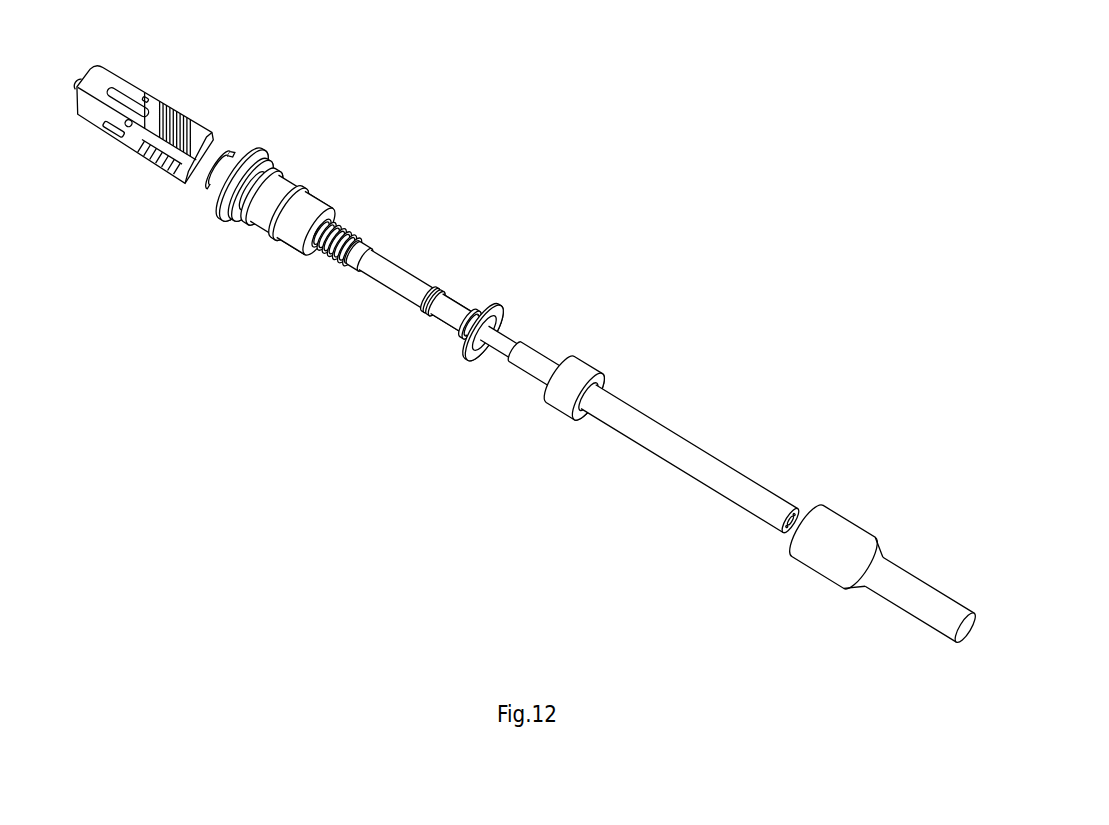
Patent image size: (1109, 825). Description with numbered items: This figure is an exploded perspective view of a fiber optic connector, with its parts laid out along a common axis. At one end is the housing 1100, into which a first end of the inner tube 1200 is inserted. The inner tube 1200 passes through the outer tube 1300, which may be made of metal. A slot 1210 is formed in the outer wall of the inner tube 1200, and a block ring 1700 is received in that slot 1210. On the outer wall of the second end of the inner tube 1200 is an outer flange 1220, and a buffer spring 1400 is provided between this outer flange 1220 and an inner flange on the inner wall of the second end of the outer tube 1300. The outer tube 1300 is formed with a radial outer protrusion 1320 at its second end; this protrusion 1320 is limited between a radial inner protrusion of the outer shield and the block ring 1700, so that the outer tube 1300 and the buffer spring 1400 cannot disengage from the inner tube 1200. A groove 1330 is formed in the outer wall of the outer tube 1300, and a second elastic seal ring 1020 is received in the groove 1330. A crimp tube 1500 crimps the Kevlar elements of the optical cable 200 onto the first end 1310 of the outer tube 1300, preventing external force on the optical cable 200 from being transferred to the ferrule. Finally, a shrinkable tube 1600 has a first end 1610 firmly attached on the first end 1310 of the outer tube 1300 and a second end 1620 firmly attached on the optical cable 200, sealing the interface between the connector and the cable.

The housing 1100 is at (157, 108).
The block ring 1700 is at (203, 190).
The outer tube 1300 is at (304, 201).
The radial outer protrusion 1320 is at (260, 150).
The groove 1330 is at (247, 218).
The first end of the outer tube 1310 is at (295, 232).
The buffer spring 1400 is at (343, 221).
The inner tube 1200 is at (415, 292).
The slot 1210 is at (430, 315).
The outer flange 1220 is at (480, 303).
The second elastic seal ring 1020 is at (498, 307).
The crimp tube 1500 is at (590, 368).
The optical cable 200 is at (653, 427).
The shrinkable tube 1600 is at (873, 566).
The first end of the shrinkable tube 1610 is at (838, 535).
The second end of the shrinkable tube 1620 is at (908, 582).